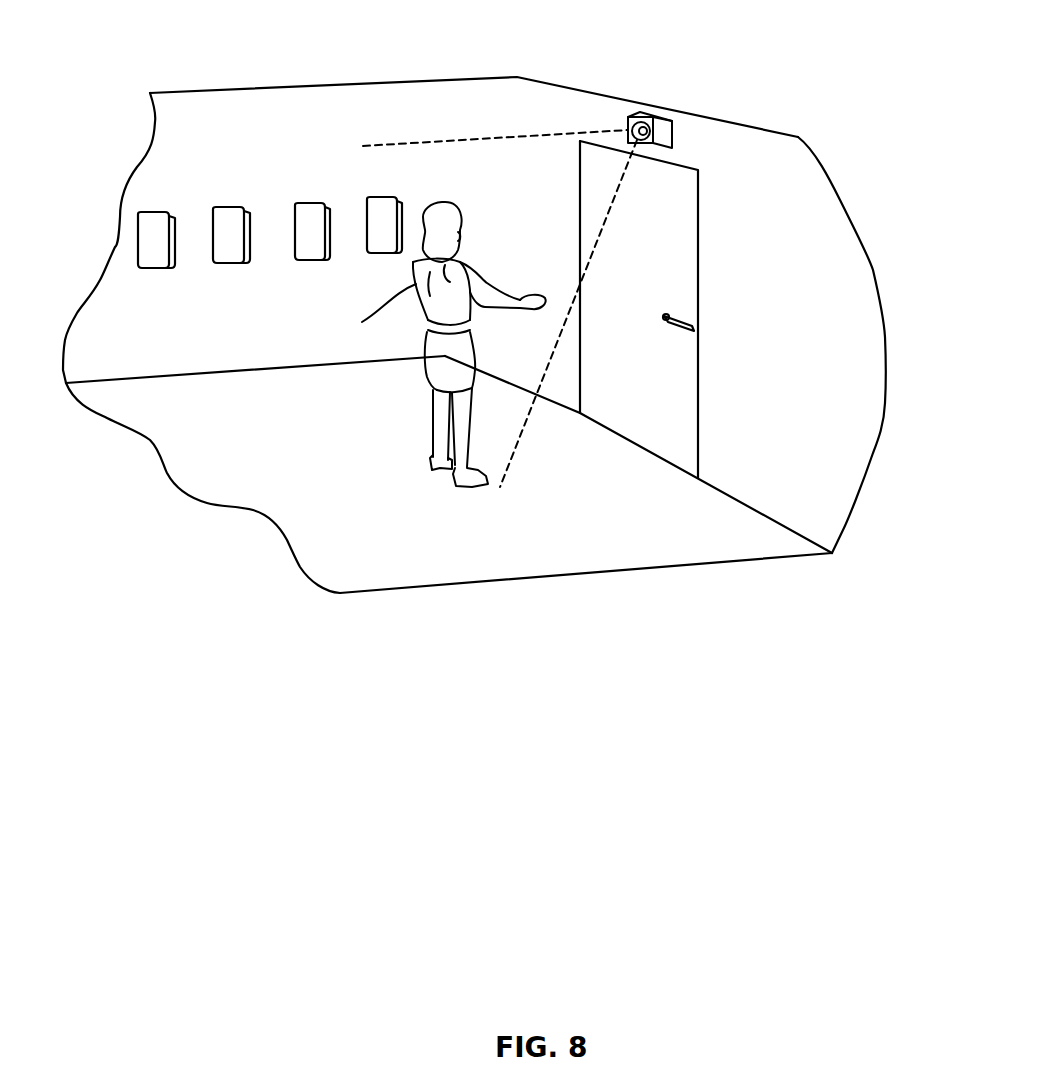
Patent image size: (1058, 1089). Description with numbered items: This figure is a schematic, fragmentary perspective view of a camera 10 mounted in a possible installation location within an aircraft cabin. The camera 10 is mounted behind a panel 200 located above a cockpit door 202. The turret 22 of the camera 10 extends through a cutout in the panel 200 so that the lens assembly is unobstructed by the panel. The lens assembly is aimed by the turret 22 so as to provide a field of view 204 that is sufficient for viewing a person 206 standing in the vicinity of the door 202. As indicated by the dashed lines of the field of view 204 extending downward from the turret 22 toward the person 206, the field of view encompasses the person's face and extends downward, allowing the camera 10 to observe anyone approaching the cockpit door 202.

The camera 10 is at (660, 115).
The turret 22 is at (640, 117).
The panel 200 is at (793, 290).
The cockpit door 202 is at (663, 397).
The field of view 204 is at (442, 137).
The person 206 is at (364, 322).